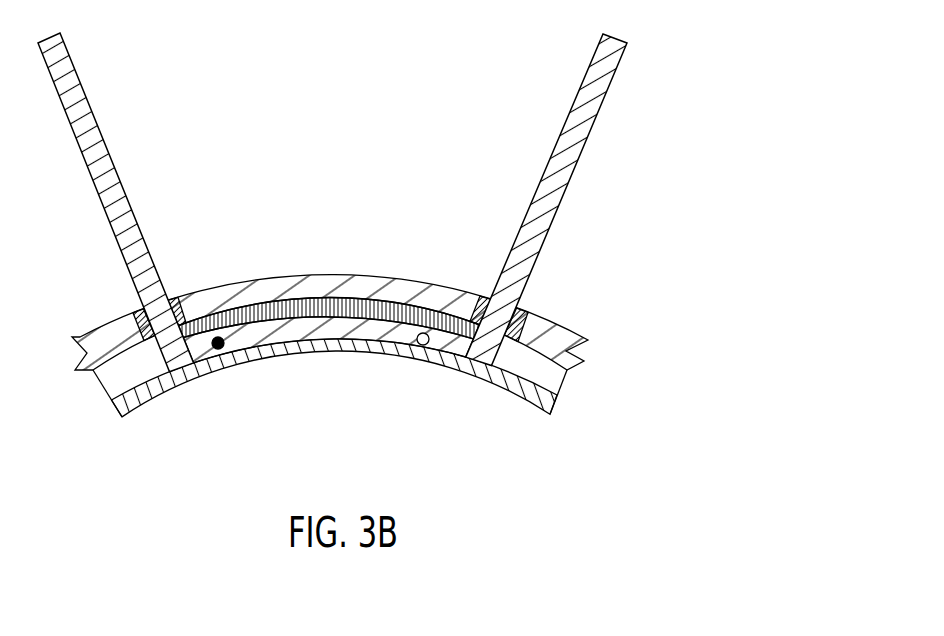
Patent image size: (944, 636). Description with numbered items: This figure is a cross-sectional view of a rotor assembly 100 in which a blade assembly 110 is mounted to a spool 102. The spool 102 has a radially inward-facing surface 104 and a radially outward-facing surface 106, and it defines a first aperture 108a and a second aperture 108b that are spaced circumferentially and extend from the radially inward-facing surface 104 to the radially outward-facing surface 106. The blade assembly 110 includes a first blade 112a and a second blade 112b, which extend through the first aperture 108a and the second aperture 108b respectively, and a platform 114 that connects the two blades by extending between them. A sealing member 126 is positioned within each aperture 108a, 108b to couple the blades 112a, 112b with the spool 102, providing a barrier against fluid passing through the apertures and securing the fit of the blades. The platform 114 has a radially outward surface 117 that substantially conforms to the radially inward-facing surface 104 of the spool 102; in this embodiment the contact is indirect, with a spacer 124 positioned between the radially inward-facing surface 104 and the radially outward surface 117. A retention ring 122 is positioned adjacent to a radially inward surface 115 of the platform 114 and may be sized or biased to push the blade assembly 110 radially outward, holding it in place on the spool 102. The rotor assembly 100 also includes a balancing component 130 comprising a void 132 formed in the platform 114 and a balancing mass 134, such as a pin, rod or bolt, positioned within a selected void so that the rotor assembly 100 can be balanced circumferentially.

The rotor assembly 100 is at (726, 144).
The spool 102 is at (543, 345).
The radially inward-facing surface 104 is at (523, 350).
The radially outward-facing surface 106 is at (560, 338).
The first aperture 108a is at (148, 356).
The second aperture 108b is at (486, 293).
The blade assembly 110 is at (118, 236).
The first blade 112a is at (108, 160).
The second blade 112b is at (588, 129).
The platform 114 is at (465, 353).
The radially inward surface 115 is at (262, 350).
The radially outward surface 117 is at (271, 313).
The retention ring 122 is at (344, 345).
The spacer 124 is at (353, 289).
The sealing member 126 is at (174, 297).
The balancing component 130 is at (234, 341).
The void 132 is at (418, 350).
The balancing mass 134 is at (219, 350).